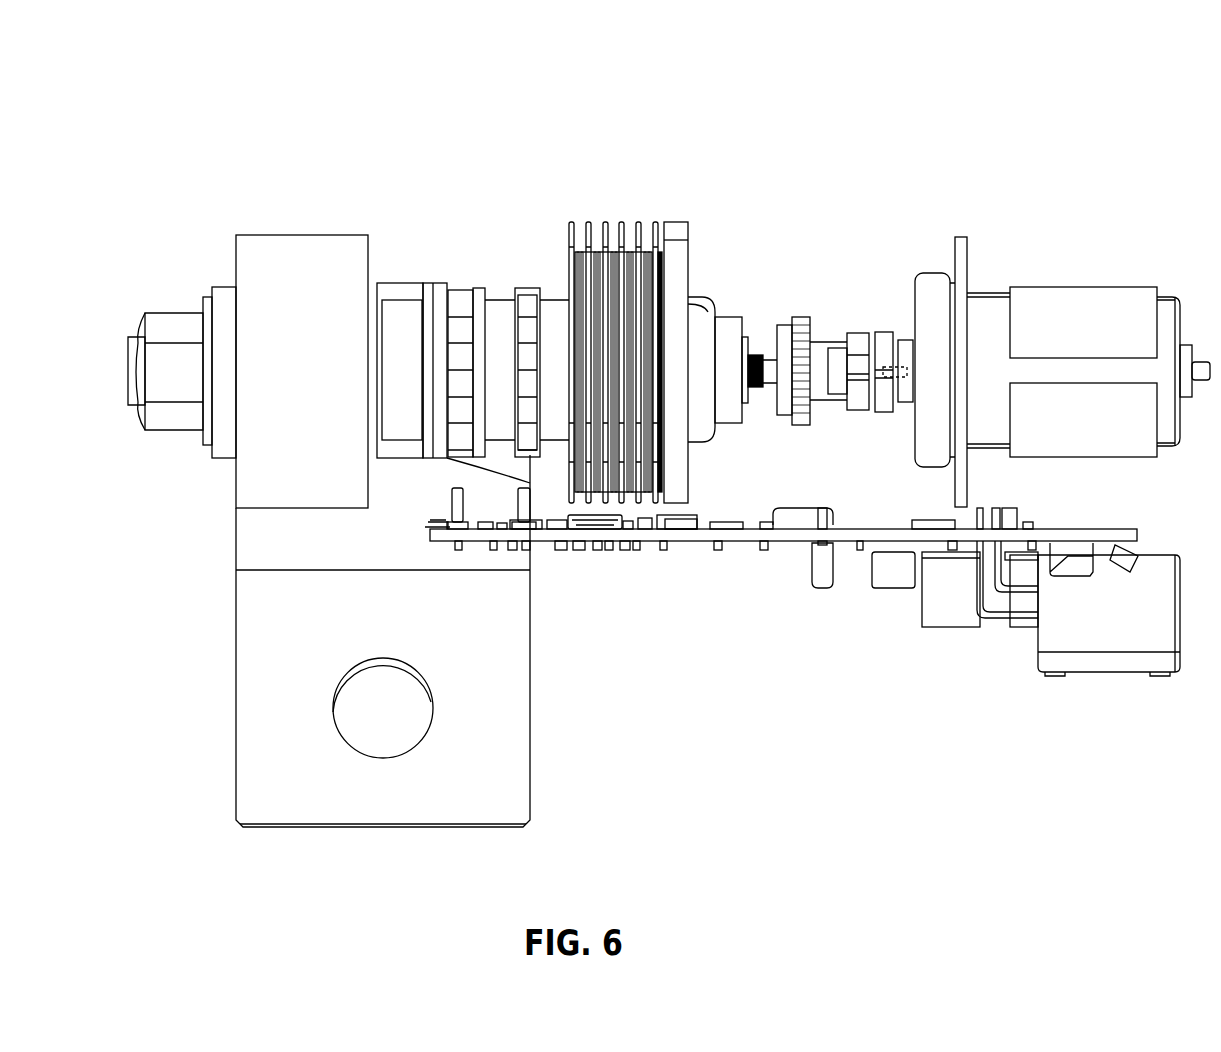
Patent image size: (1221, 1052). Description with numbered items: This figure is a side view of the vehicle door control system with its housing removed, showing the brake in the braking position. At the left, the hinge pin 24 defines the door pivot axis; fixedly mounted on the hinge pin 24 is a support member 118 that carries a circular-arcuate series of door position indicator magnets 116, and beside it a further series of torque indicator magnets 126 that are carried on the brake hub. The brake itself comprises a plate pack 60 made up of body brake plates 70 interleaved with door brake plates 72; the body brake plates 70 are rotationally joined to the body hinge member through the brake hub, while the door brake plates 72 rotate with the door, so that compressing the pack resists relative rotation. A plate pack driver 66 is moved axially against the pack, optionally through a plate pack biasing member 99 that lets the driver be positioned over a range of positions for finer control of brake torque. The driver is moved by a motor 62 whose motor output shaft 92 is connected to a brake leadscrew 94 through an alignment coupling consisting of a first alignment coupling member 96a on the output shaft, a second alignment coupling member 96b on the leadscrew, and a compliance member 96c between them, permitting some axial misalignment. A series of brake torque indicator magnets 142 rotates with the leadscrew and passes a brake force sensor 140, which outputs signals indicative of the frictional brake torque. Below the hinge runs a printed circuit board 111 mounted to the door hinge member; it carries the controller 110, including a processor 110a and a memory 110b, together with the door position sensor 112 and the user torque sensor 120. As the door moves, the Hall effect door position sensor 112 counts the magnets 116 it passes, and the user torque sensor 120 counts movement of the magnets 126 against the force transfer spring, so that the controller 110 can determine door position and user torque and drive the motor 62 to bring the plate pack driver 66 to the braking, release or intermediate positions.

The hinge pin 24 is at (440, 300).
The support member 118 is at (438, 410).
The door position indicator magnets 116 is at (458, 308).
The torque indicator magnets 126 is at (520, 296).
The plate pack 60 is at (596, 180).
The door brake plates 72 is at (619, 222).
The body brake plates 70 is at (643, 383).
The plate pack biasing member 99 is at (660, 388).
The plate pack driver 66 is at (678, 230).
The brake leadscrew 94 is at (762, 356).
The second alignment coupling member 96b is at (782, 325).
The brake torque indicator magnets 142 is at (808, 323).
The compliance member 96c is at (858, 353).
The first alignment coupling member 96a is at (883, 348).
The motor output shaft 92 is at (903, 360).
The motor 62 is at (1092, 313).
The controller 110 is at (781, 706).
The printed circuit board 111 is at (638, 538).
The processor 110a is at (588, 527).
The memory 110b is at (687, 527).
The door position sensor 112 is at (460, 522).
The user torque sensor 120 is at (535, 527).
The brake force sensor 140 is at (833, 510).